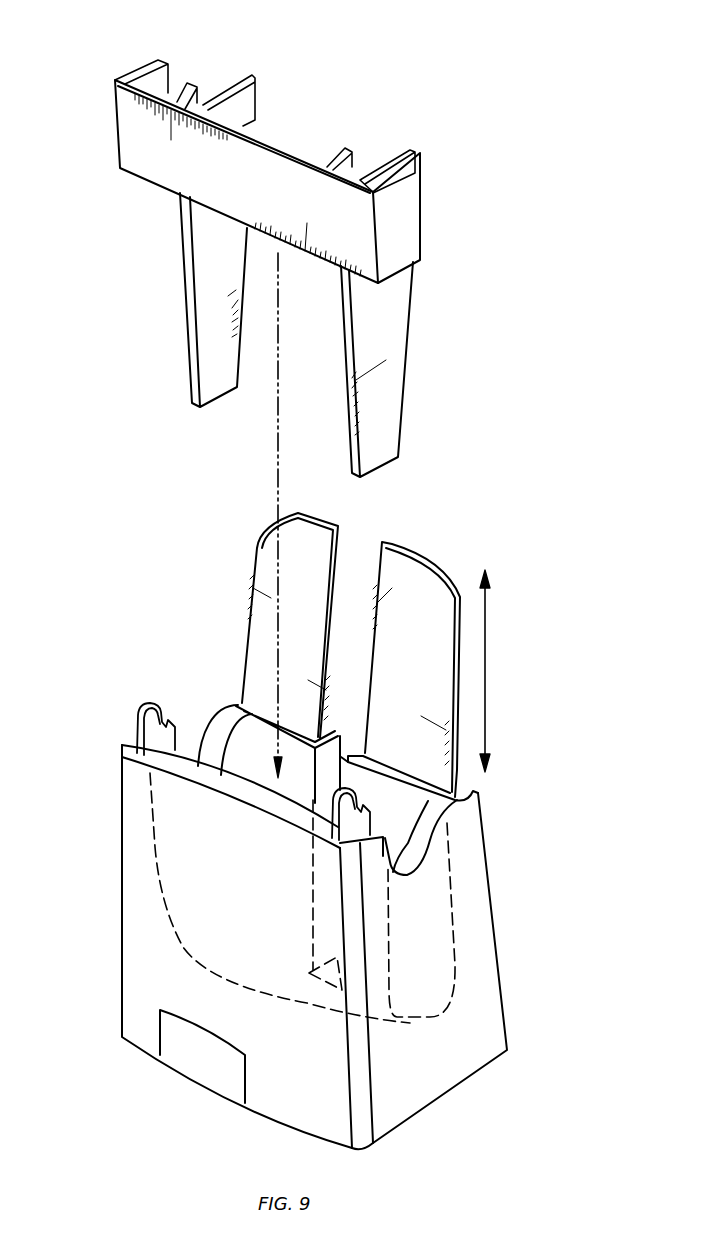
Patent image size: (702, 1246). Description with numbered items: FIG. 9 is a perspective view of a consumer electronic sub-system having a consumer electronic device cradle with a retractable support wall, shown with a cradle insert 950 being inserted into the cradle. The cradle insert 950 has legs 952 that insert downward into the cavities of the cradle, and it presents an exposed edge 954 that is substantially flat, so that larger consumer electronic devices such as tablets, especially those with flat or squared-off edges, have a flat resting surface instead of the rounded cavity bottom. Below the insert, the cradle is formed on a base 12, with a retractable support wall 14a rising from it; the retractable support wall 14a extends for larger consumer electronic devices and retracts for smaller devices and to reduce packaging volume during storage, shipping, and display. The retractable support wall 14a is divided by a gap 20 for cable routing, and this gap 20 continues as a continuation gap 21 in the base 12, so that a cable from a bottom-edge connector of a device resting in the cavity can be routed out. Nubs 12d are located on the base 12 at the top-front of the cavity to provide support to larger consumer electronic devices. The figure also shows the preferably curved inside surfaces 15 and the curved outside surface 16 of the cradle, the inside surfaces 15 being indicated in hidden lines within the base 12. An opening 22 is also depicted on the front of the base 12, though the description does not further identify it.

The cradle insert 950 is at (433, 127).
The legs 952 is at (205, 272).
The exposed edge 954 is at (231, 88).
The gap 20 is at (363, 535).
The retractable support wall 14a is at (267, 548).
The base 12 is at (122, 895).
The nubs 12d is at (138, 708).
The continuation gap 21 is at (319, 793).
The outside surface 16 is at (410, 863).
The inside surfaces 15 is at (433, 1017).
The window 22 is at (200, 1065).